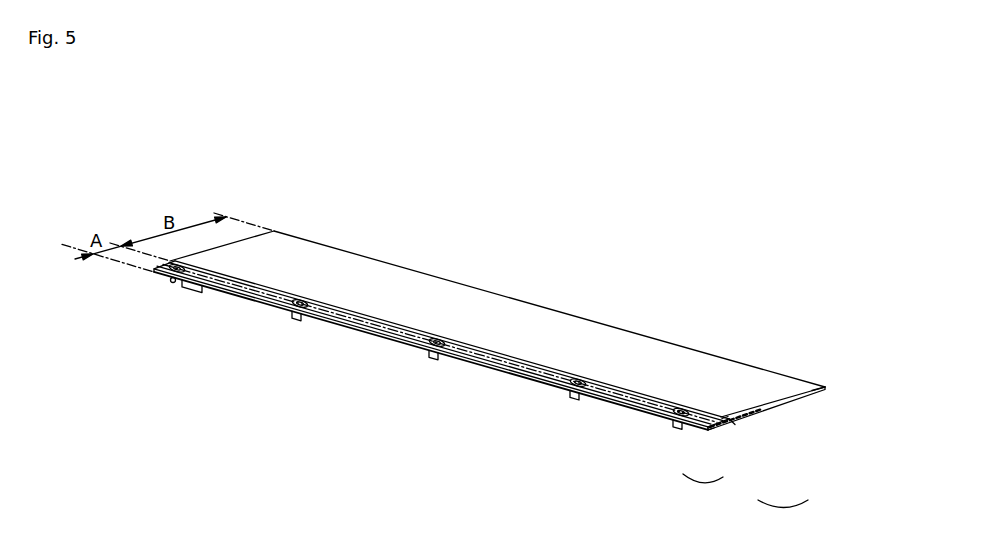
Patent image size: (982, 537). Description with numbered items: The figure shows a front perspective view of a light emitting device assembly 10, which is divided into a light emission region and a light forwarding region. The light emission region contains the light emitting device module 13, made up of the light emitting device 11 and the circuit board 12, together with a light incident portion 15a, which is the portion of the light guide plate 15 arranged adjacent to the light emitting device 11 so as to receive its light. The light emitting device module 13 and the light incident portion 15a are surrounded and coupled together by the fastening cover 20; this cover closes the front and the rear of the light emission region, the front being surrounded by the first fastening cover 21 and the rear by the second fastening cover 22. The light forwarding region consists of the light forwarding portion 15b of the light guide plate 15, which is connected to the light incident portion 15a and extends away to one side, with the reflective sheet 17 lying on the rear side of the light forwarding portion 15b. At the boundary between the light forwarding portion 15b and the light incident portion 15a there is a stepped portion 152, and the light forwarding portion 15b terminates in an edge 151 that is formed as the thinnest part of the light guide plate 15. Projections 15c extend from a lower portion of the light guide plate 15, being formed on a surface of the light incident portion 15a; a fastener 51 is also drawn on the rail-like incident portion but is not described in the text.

The light emitting device assembly 10 is at (441, 264).
The edge 151 is at (537, 306).
The stepped portion 152 is at (397, 326).
The light guide plate 15 is at (788, 307).
The light incident portion 15a is at (721, 417).
The light forwarding portion 15b is at (773, 403).
The projections 15c is at (447, 348).
The fastener 51 is at (681, 407).
The first fastening cover 21 is at (681, 431).
The second fastening cover 22 is at (713, 431).
The fastening cover 20 is at (703, 490).
The light emitting device 11 is at (725, 429).
The circuit board 12 is at (728, 428).
The light emitting device module 13 is at (783, 517).
The reflective sheet 17 is at (811, 397).